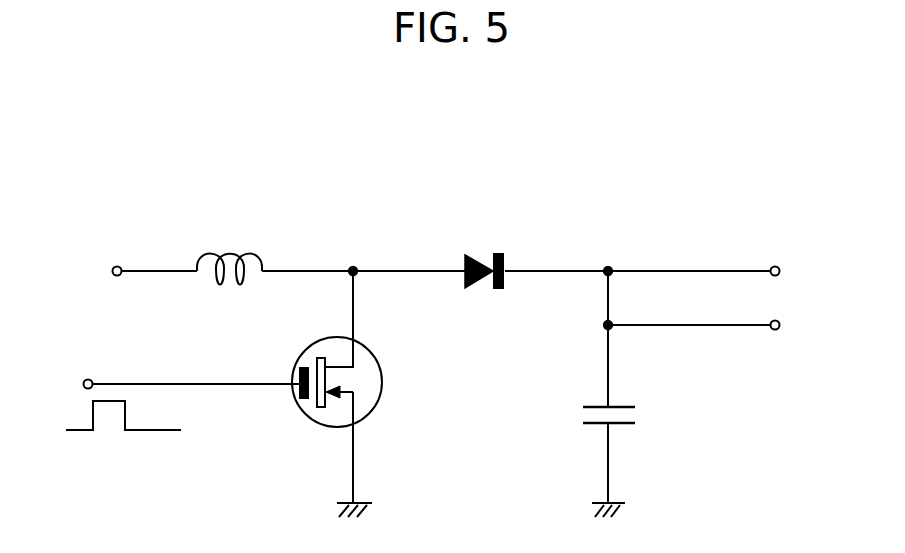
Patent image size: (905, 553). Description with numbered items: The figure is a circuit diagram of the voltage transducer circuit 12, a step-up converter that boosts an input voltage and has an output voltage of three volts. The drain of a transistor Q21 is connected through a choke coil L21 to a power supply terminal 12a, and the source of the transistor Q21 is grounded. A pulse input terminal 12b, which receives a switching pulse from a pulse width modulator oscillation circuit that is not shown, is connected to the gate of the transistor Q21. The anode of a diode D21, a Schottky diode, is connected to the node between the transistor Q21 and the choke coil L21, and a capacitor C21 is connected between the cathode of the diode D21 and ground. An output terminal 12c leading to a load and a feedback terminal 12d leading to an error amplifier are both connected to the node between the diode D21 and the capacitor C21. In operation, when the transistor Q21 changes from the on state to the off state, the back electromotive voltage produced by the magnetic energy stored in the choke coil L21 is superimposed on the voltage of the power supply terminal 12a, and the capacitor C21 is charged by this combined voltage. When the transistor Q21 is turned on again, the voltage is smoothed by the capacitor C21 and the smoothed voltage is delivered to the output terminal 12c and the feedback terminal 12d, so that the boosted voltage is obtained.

The voltage transducer circuit 12 is at (577, 179).
The power supply terminal 12a is at (112, 271).
The pulse input terminal 12b is at (83, 384).
The output terminal 12c is at (780, 272).
The feedback terminal 12d is at (780, 326).
The choke coil L21 is at (234, 244).
The diode D21 is at (478, 253).
The transistor Q21 is at (414, 353).
The capacitor C21 is at (581, 414).